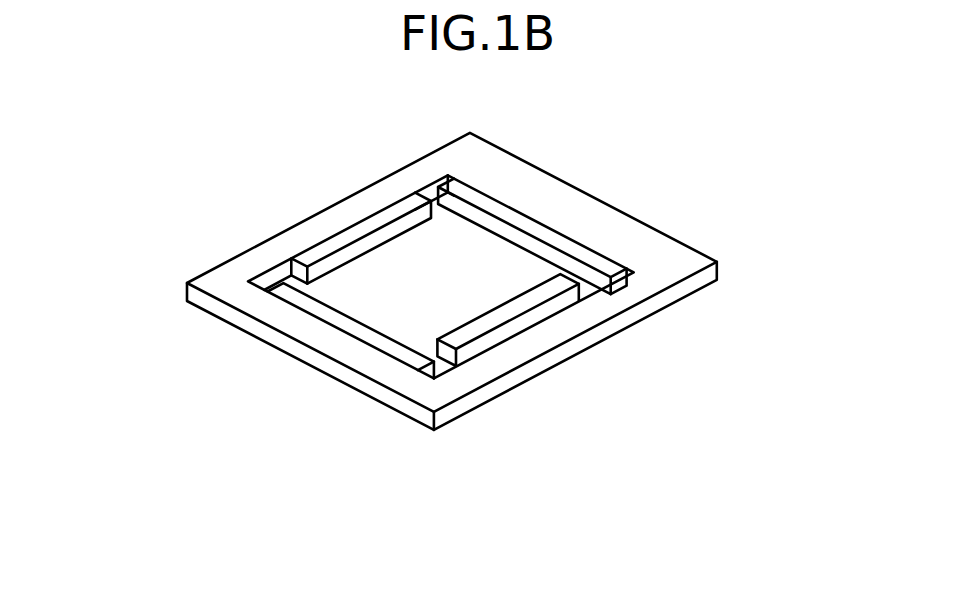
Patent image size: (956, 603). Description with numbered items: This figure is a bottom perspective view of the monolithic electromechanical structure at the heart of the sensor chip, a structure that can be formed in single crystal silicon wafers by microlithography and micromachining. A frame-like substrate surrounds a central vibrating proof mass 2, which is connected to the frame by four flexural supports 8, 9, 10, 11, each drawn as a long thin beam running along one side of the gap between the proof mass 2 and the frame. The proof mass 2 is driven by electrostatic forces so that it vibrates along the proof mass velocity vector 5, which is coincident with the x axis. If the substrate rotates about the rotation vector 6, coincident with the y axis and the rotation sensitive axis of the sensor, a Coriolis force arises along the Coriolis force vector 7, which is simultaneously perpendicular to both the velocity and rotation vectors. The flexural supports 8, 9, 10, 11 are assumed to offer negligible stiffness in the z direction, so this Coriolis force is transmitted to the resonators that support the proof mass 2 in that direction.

The proof mass 2 is at (471, 311).
The proof mass velocity vector 5 is at (445, 448).
The rotation vector 6 is at (607, 357).
The Coriolis force vector 7 is at (287, 368).
The flexural support 8 is at (291, 266).
The flexural support 9 is at (418, 192).
The flexural support 10 is at (581, 265).
The flexural support 11 is at (455, 360).